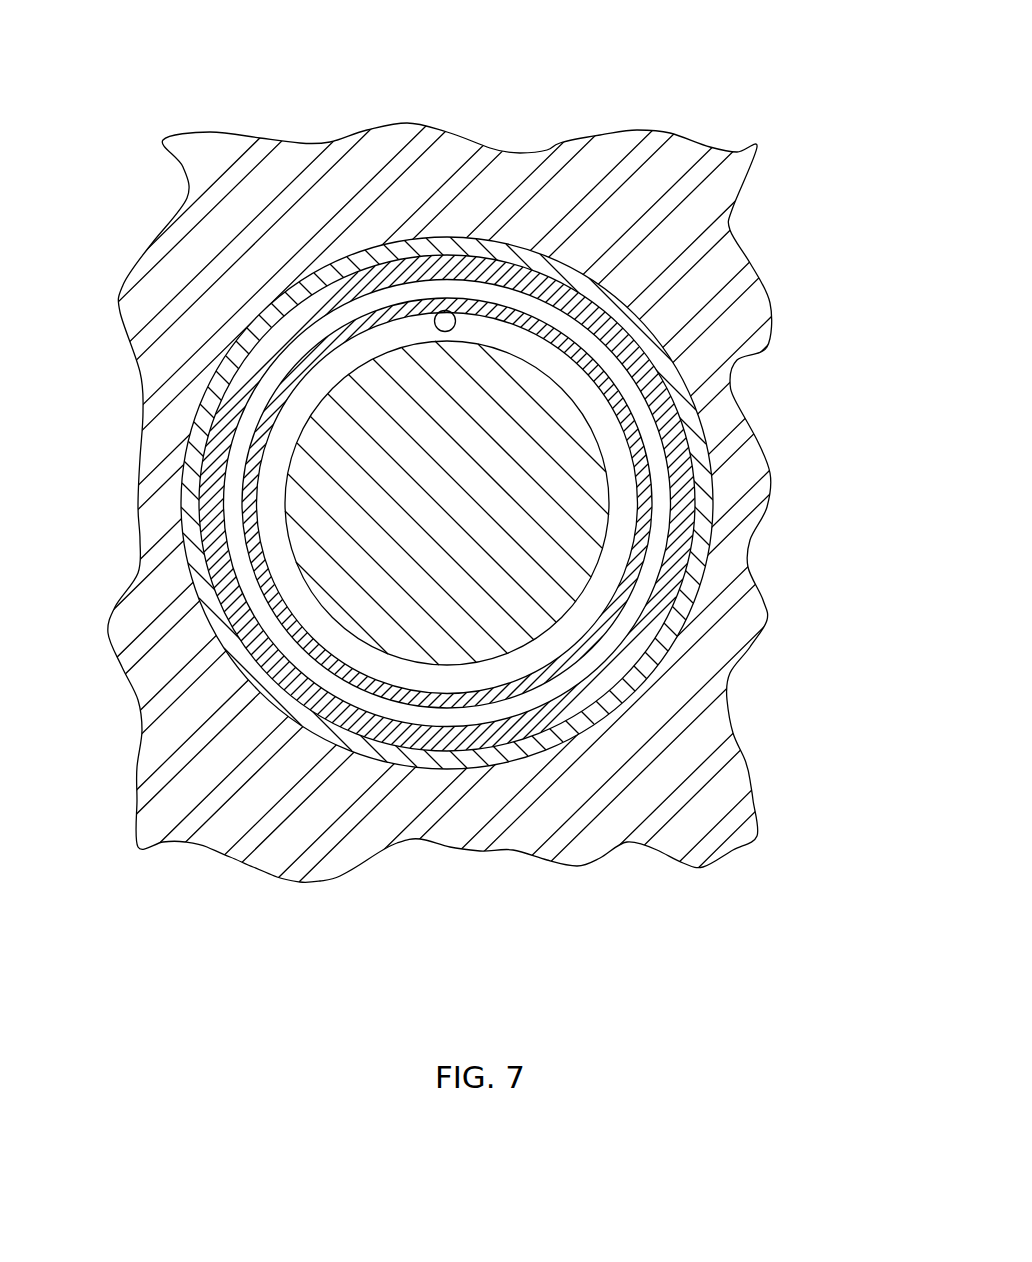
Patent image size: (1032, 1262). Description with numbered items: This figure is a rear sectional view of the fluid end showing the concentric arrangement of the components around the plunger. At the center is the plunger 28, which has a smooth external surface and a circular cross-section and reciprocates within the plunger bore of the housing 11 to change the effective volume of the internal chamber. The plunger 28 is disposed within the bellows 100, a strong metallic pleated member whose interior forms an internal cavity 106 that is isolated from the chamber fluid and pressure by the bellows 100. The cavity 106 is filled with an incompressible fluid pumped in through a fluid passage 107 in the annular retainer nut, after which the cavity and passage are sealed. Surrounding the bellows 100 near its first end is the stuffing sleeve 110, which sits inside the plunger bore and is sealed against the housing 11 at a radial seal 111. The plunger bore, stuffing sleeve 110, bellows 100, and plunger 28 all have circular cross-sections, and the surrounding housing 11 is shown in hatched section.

The housing 11 is at (571, 188).
The plunger 28 is at (507, 555).
The bellows 100 is at (243, 523).
The internal cavity 106 is at (273, 438).
The fluid passage 107 is at (455, 323).
The stuffing sleeve 110 is at (298, 705).
The radial seal 111 is at (595, 727).